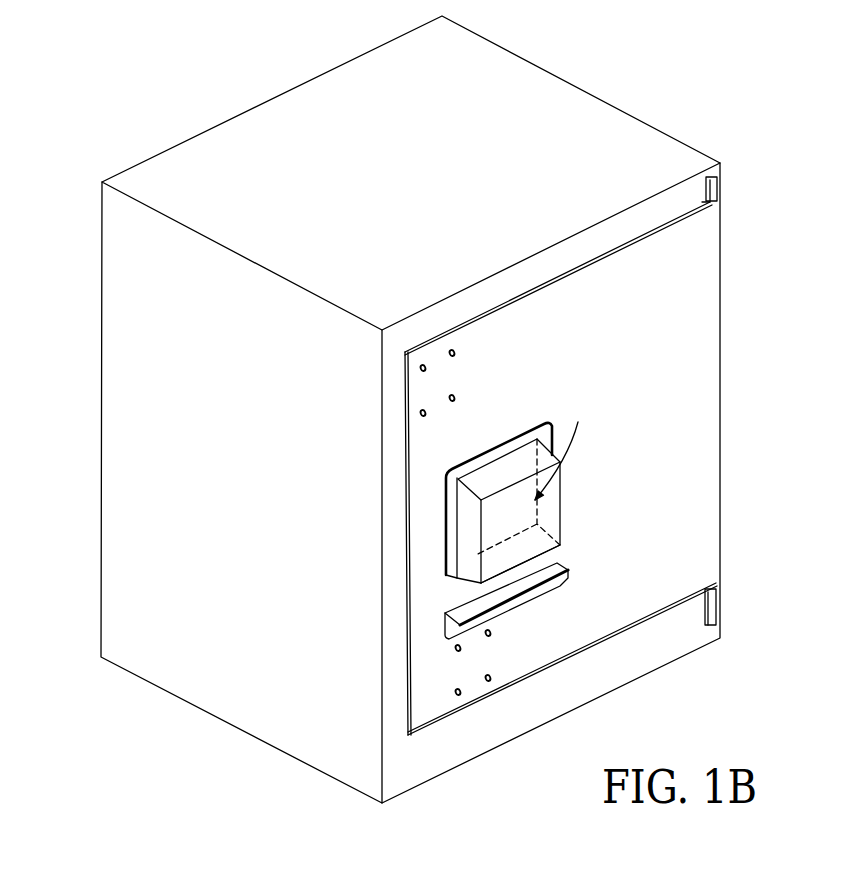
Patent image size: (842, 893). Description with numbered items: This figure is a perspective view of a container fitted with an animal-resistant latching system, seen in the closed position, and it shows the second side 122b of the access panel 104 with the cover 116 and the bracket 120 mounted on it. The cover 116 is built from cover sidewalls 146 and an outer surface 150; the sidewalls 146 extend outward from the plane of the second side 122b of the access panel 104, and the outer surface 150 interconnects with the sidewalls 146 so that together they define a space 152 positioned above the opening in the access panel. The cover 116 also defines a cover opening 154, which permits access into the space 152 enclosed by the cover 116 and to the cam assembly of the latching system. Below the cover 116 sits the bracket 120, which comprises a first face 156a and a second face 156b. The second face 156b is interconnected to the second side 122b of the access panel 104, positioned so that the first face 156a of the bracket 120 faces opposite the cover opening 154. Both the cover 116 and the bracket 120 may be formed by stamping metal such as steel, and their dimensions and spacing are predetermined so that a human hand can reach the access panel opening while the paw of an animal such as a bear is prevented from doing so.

The access panel 104 is at (653, 593).
The cover 116 is at (560, 490).
The bracket 120 is at (548, 584).
The second side of the access panel 122b is at (668, 315).
The cover sidewalls 146 is at (467, 538).
The outer surface 150 is at (567, 449).
The space 152 is at (468, 521).
The cover opening 154 is at (505, 557).
The first face of the bracket 156a is at (452, 600).
The second face of the bracket 156b is at (545, 588).